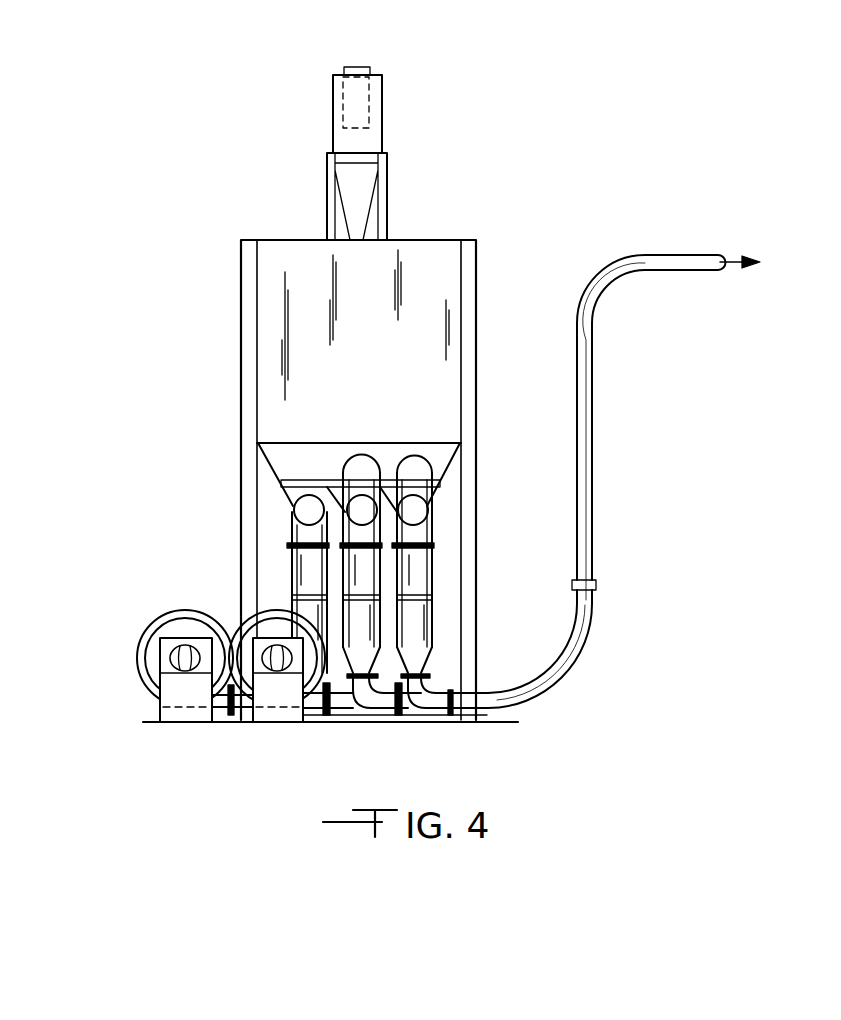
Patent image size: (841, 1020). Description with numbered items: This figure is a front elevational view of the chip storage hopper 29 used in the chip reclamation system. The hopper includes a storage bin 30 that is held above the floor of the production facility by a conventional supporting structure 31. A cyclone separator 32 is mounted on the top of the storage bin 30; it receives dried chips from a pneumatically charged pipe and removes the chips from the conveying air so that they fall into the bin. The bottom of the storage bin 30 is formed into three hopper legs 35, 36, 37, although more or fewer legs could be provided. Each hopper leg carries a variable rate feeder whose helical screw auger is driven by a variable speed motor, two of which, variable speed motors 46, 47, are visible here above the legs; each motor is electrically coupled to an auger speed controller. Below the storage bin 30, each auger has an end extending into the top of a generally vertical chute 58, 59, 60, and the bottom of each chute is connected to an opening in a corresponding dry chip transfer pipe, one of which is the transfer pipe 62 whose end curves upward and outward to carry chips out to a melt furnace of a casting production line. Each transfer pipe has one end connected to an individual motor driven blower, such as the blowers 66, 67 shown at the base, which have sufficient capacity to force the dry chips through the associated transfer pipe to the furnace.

The chip storage hopper 29 is at (487, 198).
The storage bin 30 is at (437, 295).
The supporting structure 31 is at (468, 475).
The cyclone separator 32 is at (382, 123).
The hopper leg 35 is at (293, 500).
The hopper leg 36 is at (330, 452).
The hopper leg 37 is at (437, 492).
The variable speed motor 46 is at (360, 450).
The variable speed motor 47 is at (413, 452).
The vertical chute 58 is at (303, 563).
The vertical chute 59 is at (380, 577).
The vertical chute 60 is at (430, 627).
The dry chip transfer pipe 62 is at (610, 288).
The motor driven blower 66 is at (163, 612).
The motor driven blower 67 is at (245, 625).